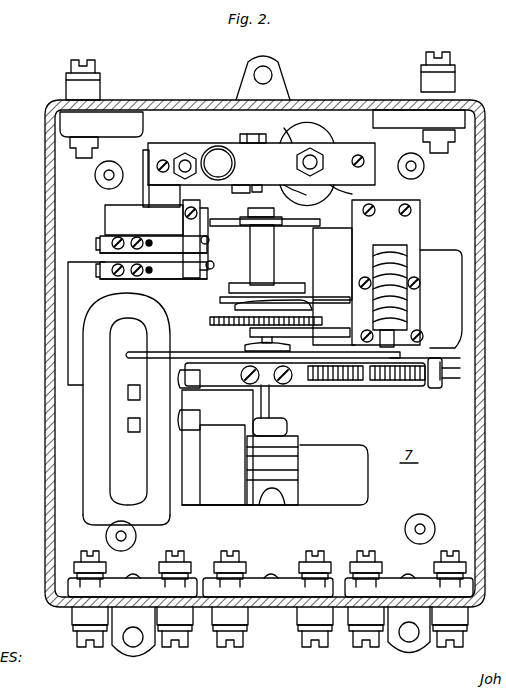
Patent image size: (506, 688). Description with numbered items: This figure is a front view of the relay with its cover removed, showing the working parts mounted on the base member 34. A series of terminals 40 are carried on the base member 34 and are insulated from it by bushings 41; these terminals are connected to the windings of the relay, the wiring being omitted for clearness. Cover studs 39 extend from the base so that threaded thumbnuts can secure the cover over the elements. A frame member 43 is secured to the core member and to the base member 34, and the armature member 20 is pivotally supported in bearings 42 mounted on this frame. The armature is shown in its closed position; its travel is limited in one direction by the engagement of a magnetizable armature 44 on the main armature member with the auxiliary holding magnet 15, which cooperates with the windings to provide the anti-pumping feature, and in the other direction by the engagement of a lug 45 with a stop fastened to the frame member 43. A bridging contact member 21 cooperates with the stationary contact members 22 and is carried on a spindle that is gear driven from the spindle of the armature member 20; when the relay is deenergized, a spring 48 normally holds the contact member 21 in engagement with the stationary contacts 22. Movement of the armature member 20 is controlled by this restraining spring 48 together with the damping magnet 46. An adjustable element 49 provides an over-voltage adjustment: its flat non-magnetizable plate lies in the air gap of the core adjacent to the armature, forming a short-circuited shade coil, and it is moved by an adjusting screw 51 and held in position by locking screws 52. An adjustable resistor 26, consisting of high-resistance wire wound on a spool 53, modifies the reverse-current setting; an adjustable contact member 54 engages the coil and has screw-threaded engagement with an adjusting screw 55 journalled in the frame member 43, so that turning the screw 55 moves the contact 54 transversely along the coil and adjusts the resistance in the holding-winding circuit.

The auxiliary holding magnet 15 is at (406, 300).
The armature member 20 is at (203, 352).
The contact member 21 is at (206, 268).
The stationary contact members 22 is at (178, 268).
The adjustable resistor 26 is at (313, 136).
The base member 34 is at (50, 336).
The cover studs 39 is at (423, 170).
The terminals 40 is at (100, 70).
The bushings 41 is at (66, 95).
The bearings 42 is at (272, 222).
The frame member 43 is at (218, 437).
The magnetizable armature 44 is at (396, 338).
The lug 45 is at (335, 387).
The damping magnet 46 is at (94, 405).
The spring 48 is at (238, 288).
The adjustable element 49 is at (228, 385).
The adjusting screw 51 is at (406, 383).
The locking screws 52 is at (280, 386).
The spool 53 is at (332, 138).
The adjustable contact member 54 is at (289, 134).
The adjusting screw 55 is at (216, 154).